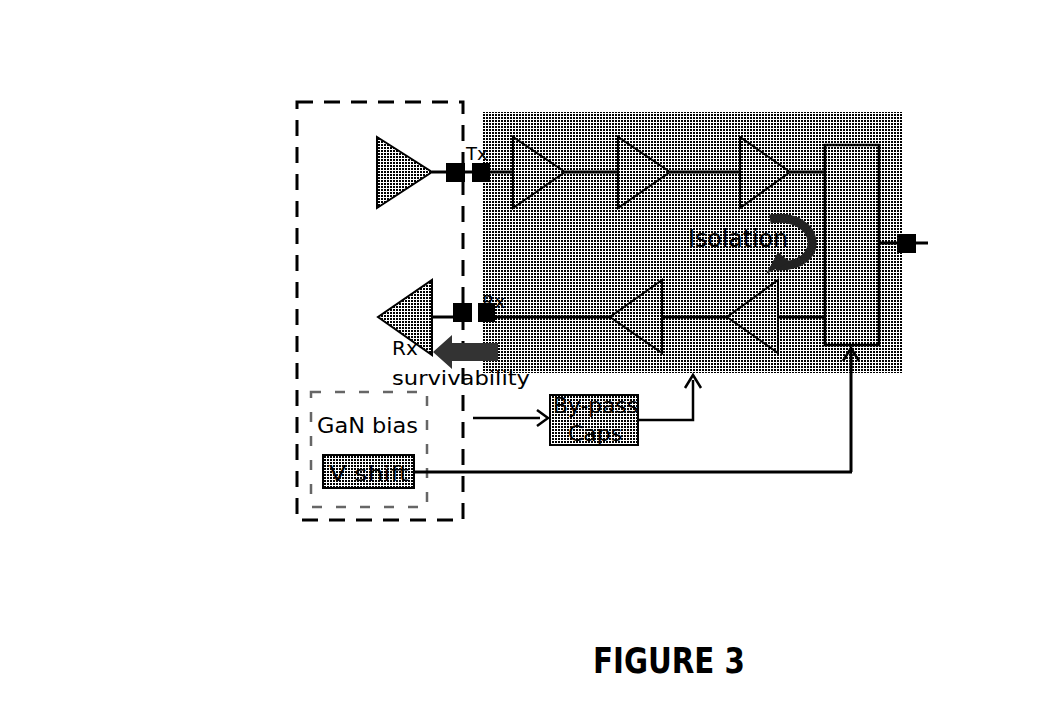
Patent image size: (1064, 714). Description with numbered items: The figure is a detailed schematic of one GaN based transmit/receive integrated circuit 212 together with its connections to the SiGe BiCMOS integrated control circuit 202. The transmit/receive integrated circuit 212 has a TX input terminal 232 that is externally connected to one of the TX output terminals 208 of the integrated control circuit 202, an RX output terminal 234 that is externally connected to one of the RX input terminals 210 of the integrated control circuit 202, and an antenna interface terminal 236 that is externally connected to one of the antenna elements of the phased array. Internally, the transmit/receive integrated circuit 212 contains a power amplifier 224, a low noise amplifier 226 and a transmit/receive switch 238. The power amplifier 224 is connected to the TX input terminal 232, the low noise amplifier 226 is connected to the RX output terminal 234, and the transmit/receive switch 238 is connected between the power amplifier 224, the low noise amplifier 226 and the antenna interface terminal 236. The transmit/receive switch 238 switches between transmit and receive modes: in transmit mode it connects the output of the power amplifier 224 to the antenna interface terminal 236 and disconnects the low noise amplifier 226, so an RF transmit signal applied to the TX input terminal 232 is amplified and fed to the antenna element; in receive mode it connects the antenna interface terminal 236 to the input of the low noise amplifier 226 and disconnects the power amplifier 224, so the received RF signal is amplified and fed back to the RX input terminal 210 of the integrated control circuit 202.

The integrated control circuit 202 is at (370, 254).
The TX output terminal 208 is at (430, 170).
The RX input terminal 210 is at (462, 325).
The transmit/receive integrated circuit 212 is at (598, 292).
The power amplifier 224 is at (750, 170).
The low noise amplifier 226 is at (763, 315).
The TX input terminal 232 is at (486, 163).
The RX output terminal 234 is at (490, 323).
The antenna interface terminal 236 is at (908, 238).
The transmit/receive switch 238 is at (848, 168).